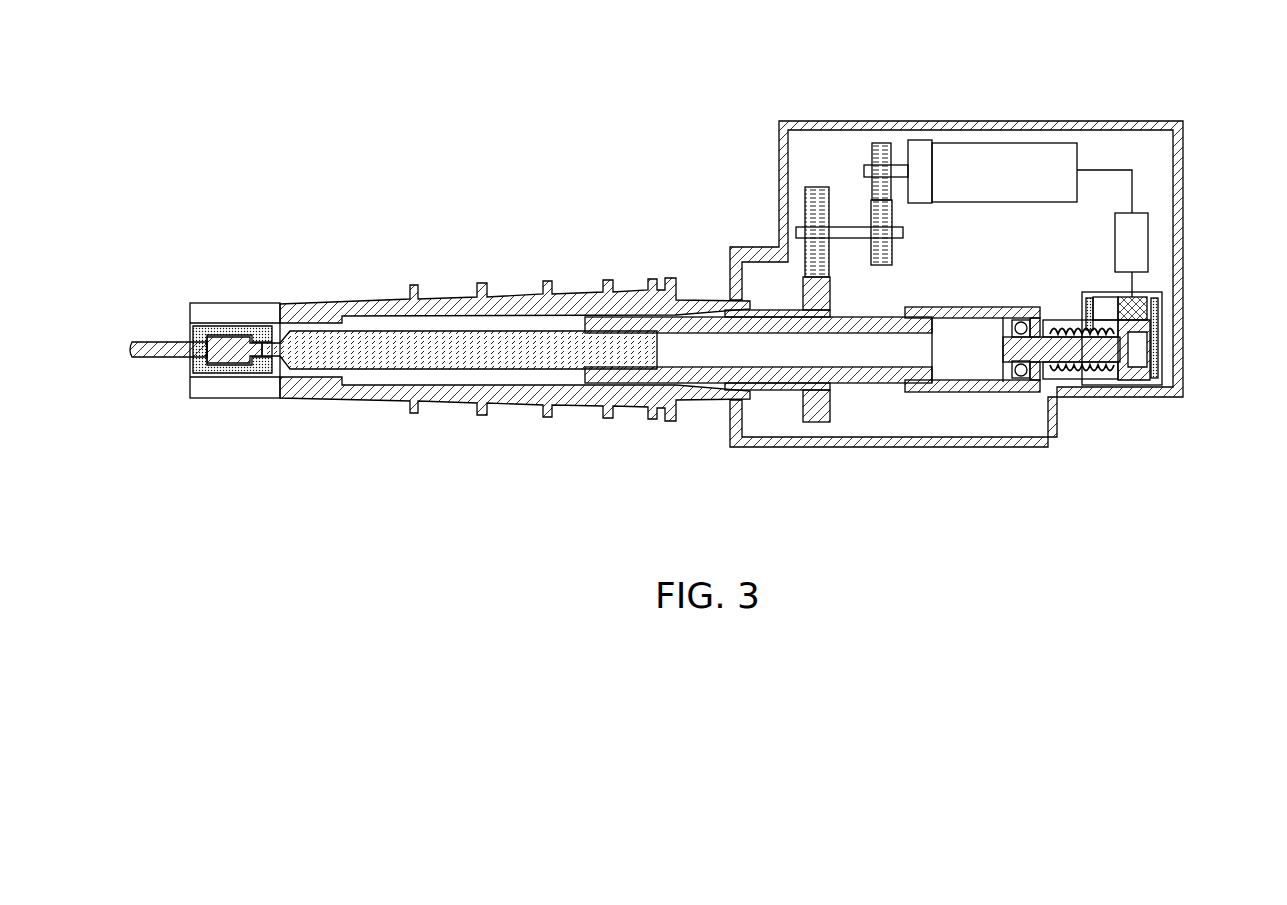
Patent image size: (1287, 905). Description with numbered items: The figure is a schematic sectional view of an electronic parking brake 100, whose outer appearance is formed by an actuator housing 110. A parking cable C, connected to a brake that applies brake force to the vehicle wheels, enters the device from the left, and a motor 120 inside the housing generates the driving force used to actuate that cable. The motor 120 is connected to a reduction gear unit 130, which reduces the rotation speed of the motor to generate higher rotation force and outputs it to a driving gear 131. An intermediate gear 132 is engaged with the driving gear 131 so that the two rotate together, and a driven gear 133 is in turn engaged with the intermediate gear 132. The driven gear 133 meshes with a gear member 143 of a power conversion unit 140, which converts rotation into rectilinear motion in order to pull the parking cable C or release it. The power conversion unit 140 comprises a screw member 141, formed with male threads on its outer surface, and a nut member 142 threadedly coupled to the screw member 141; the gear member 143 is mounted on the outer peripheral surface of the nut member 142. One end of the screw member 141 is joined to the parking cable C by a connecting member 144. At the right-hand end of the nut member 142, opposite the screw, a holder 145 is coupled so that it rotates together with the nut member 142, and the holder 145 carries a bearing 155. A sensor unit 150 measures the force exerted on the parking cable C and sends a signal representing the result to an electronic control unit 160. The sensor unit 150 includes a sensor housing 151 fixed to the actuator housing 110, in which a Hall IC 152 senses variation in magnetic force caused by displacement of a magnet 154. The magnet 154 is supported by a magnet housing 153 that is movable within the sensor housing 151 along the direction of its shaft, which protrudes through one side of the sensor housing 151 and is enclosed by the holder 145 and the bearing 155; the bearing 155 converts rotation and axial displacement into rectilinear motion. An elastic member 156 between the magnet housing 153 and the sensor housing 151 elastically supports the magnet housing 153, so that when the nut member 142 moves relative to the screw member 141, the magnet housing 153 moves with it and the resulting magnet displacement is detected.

The electronic parking brake 100 is at (650, 152).
The actuator housing 110 is at (1176, 178).
The motor 120 is at (1050, 150).
The reduction gear unit 130 is at (924, 140).
The driving gear 131 is at (883, 140).
The intermediate gear 132 is at (893, 254).
The driven gear 133 is at (808, 193).
The power conversion unit 140 is at (870, 388).
The screw member 141 is at (440, 356).
The nut member 142 is at (690, 376).
The gear member 143 is at (812, 423).
The connecting member 144 is at (258, 374).
The holder 145 is at (945, 393).
The sensor unit 150 is at (1167, 334).
The sensor housing 151 is at (1160, 356).
The Hall IC 152 is at (1091, 297).
The magnet housing 153 is at (1120, 392).
The magnet 154 is at (1142, 303).
The bearing 155 is at (1020, 320).
The elastic member 156 is at (1109, 380).
The electronic control unit 160 is at (1150, 242).
The parking cable C is at (140, 358).